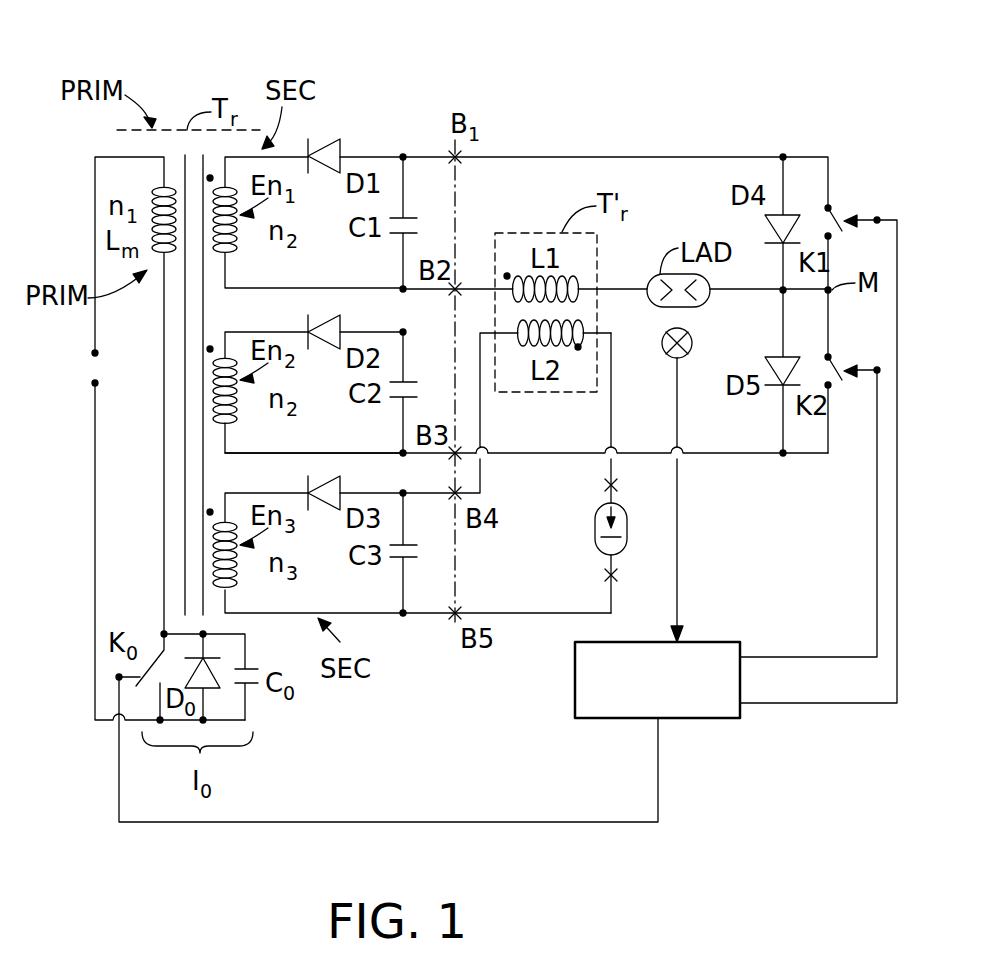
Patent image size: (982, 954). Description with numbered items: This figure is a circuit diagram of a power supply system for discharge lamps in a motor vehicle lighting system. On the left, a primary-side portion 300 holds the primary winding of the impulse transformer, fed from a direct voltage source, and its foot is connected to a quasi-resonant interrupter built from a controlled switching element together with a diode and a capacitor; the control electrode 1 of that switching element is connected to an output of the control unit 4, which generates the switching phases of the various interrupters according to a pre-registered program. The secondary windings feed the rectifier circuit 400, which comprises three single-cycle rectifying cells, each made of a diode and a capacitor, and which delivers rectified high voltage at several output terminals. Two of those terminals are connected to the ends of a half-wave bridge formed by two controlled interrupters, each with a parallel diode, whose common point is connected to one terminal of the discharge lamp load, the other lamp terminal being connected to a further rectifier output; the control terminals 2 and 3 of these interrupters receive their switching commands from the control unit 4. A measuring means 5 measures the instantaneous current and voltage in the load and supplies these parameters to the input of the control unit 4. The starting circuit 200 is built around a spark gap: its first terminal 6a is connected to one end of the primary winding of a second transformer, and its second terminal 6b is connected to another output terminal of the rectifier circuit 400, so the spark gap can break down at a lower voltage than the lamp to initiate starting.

The rectifier circuit 400 is at (400, 124).
The primary circuit 300 is at (148, 465).
The starting circuit 200 is at (552, 587).
The control unit 4 is at (668, 695).
The control electrode 1 is at (117, 677).
The control terminal of switch K1 2 is at (818, 445).
The control terminal of switch K2 3 is at (812, 495).
The measuring means 5 is at (692, 350).
The first connection terminal of the spark gap 6a is at (618, 485).
The second connection terminal of the spark gap 6b is at (618, 575).